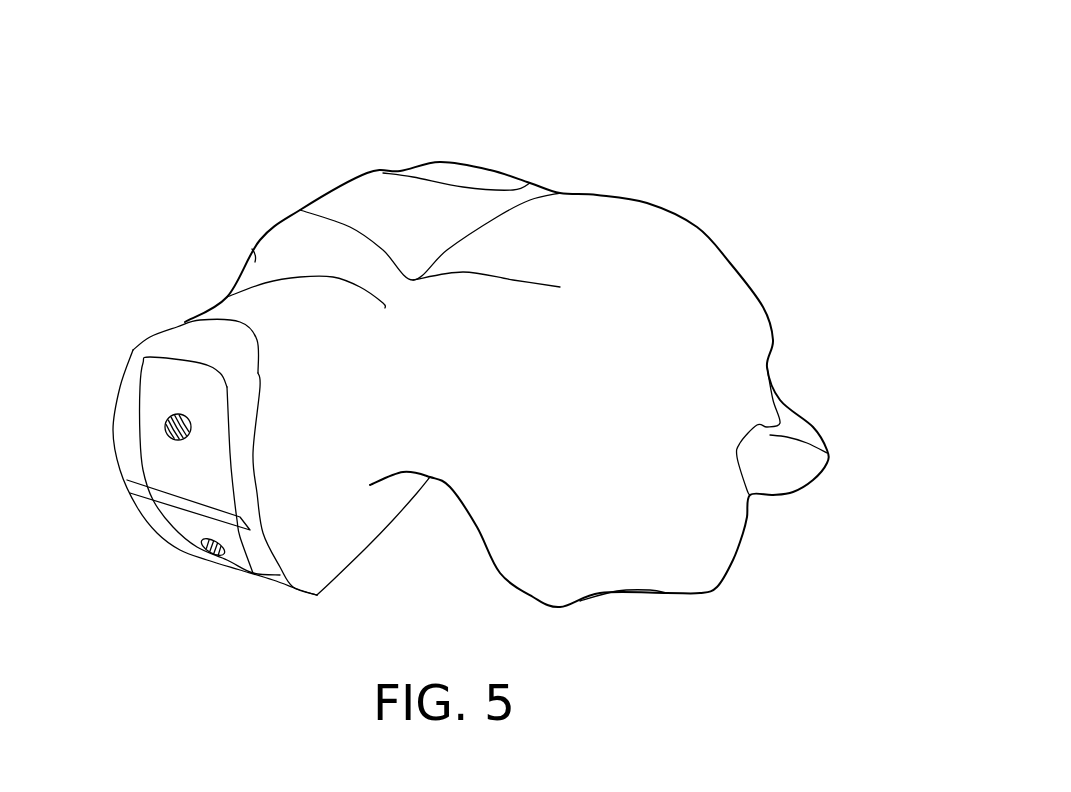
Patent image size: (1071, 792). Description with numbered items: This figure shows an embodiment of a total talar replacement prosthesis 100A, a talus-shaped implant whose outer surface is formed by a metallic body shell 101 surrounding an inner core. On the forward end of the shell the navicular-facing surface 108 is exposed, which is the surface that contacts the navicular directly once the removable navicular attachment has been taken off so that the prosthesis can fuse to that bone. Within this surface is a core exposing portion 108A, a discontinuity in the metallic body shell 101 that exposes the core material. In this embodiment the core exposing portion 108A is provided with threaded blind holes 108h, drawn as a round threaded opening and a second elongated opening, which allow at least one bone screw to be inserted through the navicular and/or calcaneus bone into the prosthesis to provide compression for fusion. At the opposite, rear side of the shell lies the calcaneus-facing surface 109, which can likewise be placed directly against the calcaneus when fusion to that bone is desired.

The total talar replacement prosthesis 100A is at (608, 112).
The metallic body shell 101 is at (253, 270).
The navicular-facing surface 108 is at (200, 340).
The core exposing portion 108A is at (180, 387).
The threaded blind hole 108h is at (165, 435).
The calcaneus-facing surface 109 is at (793, 493).